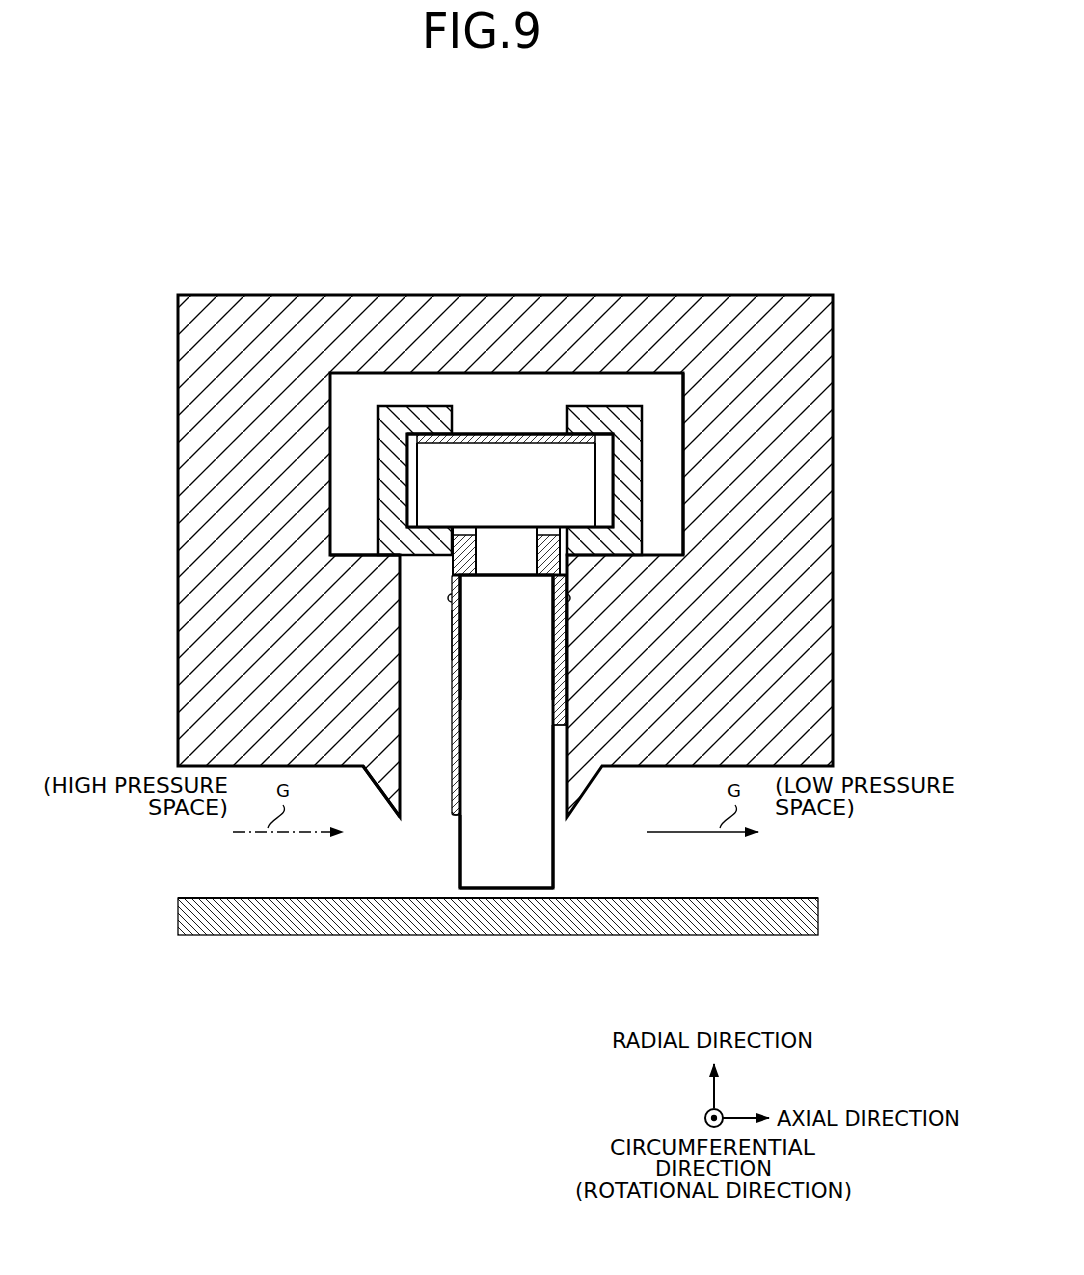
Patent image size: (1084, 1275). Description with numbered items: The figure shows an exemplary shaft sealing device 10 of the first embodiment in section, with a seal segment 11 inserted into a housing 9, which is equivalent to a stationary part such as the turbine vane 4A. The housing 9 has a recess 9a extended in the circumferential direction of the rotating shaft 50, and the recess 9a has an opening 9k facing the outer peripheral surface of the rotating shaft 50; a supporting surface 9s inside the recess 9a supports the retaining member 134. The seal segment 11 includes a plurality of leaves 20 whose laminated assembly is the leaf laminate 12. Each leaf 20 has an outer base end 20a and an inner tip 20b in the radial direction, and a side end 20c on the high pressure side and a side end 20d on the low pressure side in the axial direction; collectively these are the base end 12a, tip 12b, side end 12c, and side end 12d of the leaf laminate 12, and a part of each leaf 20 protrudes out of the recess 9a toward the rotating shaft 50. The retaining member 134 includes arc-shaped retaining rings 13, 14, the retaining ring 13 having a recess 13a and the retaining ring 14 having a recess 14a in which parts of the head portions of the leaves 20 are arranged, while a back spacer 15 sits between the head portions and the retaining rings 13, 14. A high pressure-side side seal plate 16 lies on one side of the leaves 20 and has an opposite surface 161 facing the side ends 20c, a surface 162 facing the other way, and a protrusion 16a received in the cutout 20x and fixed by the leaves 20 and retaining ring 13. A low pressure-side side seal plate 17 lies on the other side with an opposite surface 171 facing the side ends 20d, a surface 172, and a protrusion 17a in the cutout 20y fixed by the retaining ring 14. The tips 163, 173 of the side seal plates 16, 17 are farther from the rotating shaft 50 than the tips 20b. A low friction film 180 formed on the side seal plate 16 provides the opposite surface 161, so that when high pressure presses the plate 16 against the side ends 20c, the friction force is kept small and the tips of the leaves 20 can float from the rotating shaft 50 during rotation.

The shaft sealing device 10 is at (790, 228).
The housing 9 is at (806, 385).
The turbine vane 4A is at (545, 556).
The recess 9a is at (616, 383).
The supporting surface 9s is at (378, 549).
The opening 9k is at (398, 817).
The seal segment 11 is at (569, 388).
The leaf laminate 12 is at (517, 616).
The base end of leaf laminate 12a is at (470, 433).
The tip of leaf laminate 12b is at (495, 890).
The side end of leaf laminate 12c is at (458, 846).
The side end of leaf laminate 12d is at (553, 838).
The retaining ring 13 is at (404, 457).
The recess 13a is at (408, 497).
The retaining ring 14 is at (613, 456).
The recess 14a is at (612, 498).
The retaining member 134 is at (504, 480).
The back spacer 15 is at (478, 433).
The high pressure-side side seal plate 16 is at (441, 656).
The protrusion 16a is at (458, 534).
The opposite surface 161 is at (452, 597).
The surface 162 is at (452, 638).
The tip 163 is at (460, 826).
The low pressure-side side seal plate 17 is at (580, 690).
The protrusion 17a is at (544, 536).
The opposite surface 171 is at (566, 595).
The surface 172 is at (566, 641).
The tip 173 is at (552, 730).
The film 180 is at (553, 692).
The leaf 20 is at (517, 616).
The base end 20a is at (510, 381).
The tip 20b is at (506, 958).
The side end 20c is at (420, 851).
The side end 20d is at (602, 806).
The cutout 20x is at (470, 579).
The cutout 20y is at (537, 580).
The rotating shaft 50 is at (805, 895).